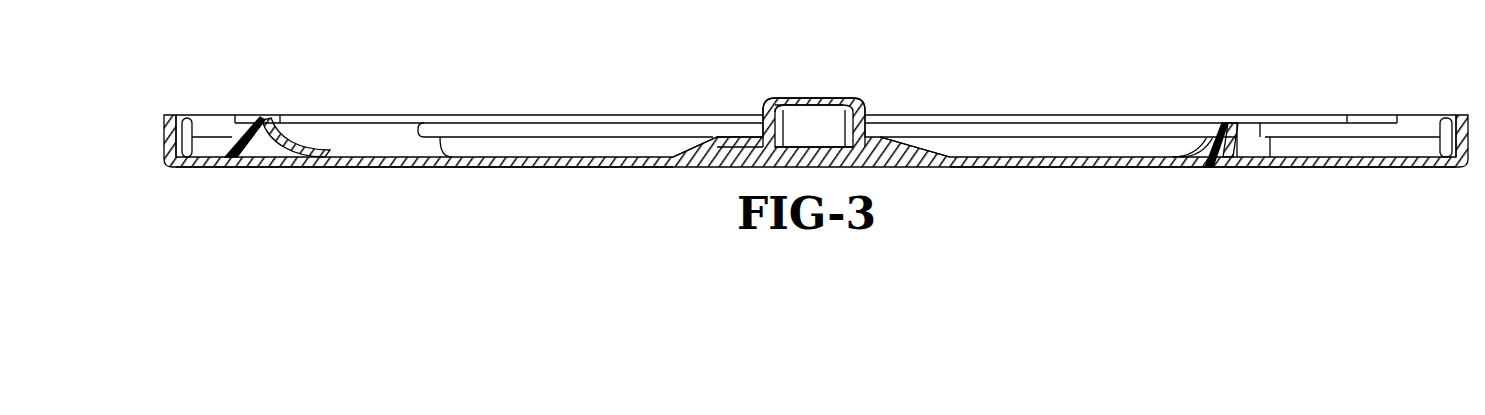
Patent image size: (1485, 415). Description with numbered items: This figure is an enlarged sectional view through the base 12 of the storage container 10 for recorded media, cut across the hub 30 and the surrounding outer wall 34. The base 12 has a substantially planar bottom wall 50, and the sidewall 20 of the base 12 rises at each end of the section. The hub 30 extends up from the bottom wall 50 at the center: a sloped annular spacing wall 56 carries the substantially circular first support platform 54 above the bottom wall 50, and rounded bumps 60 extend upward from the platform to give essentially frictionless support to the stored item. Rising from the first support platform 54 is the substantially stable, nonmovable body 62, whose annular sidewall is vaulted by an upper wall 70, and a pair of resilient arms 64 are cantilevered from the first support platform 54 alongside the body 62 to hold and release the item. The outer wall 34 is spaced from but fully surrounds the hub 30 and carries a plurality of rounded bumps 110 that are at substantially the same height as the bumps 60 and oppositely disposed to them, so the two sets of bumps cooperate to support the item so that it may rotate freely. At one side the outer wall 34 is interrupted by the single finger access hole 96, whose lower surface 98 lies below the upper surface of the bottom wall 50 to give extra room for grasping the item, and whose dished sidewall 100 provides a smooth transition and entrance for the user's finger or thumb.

The storage container 10 is at (448, 54).
The base 12 is at (590, 172).
The sidewall 20 is at (176, 118).
The hub 30 is at (846, 82).
The outer wall 34 is at (262, 114).
The bottom wall 50 is at (210, 167).
The first support platform 54 is at (902, 152).
The annular spacing wall 56 is at (708, 162).
The bumps 60 is at (731, 136).
The body 62 is at (812, 92).
The resilient arms 64 is at (758, 104).
The upper wall 70 is at (792, 94).
The finger access hole 96 is at (375, 126).
The lower surface 98 is at (331, 160).
The sidewall of finger access hole 100 is at (316, 134).
The bumps 110 is at (613, 134).